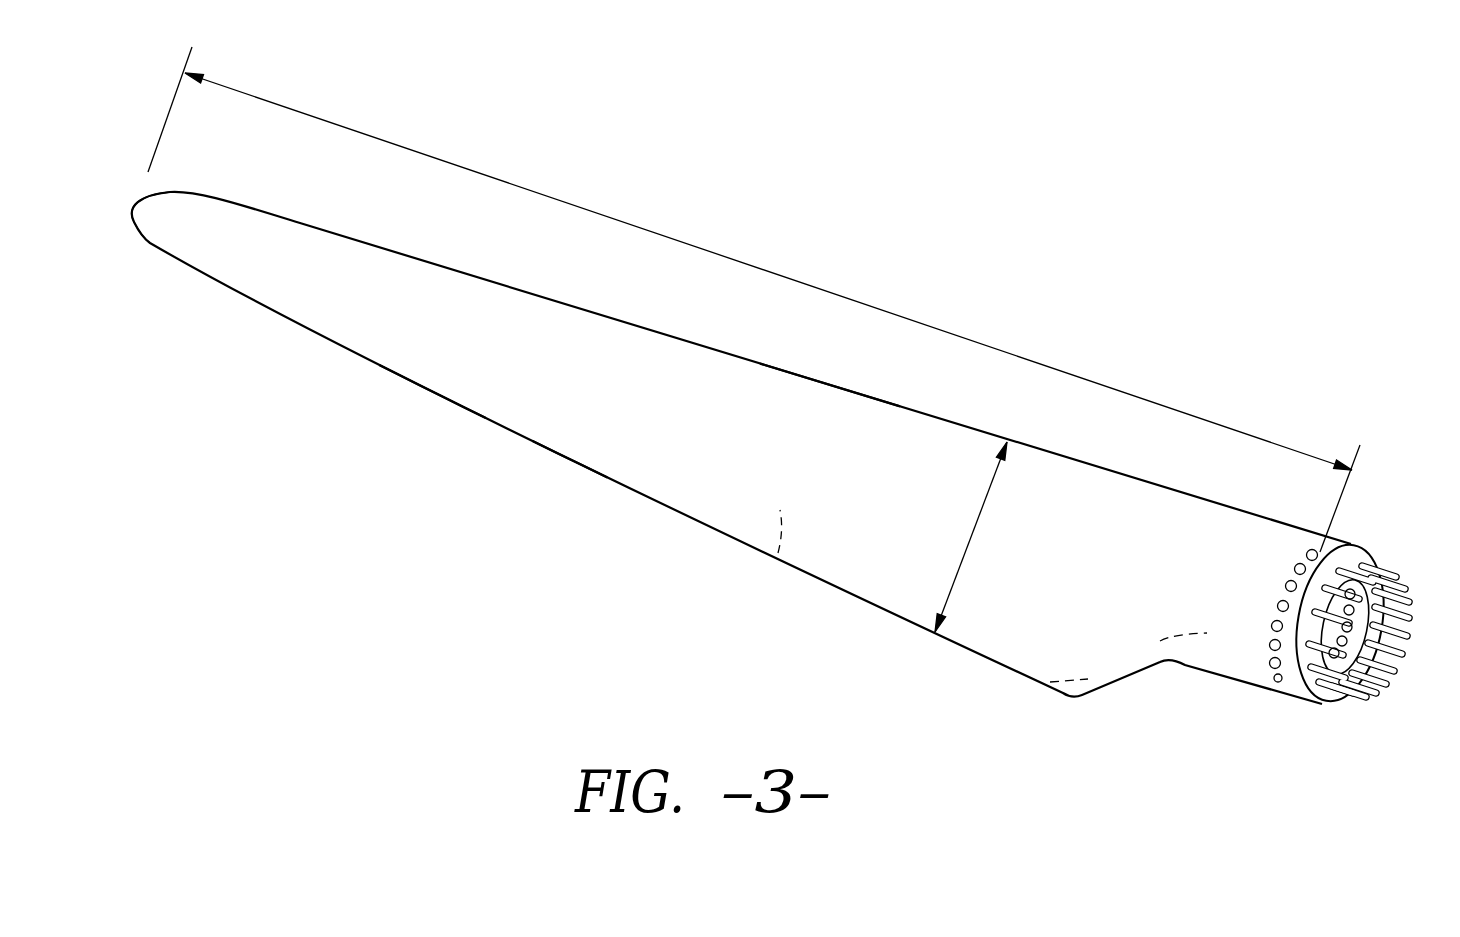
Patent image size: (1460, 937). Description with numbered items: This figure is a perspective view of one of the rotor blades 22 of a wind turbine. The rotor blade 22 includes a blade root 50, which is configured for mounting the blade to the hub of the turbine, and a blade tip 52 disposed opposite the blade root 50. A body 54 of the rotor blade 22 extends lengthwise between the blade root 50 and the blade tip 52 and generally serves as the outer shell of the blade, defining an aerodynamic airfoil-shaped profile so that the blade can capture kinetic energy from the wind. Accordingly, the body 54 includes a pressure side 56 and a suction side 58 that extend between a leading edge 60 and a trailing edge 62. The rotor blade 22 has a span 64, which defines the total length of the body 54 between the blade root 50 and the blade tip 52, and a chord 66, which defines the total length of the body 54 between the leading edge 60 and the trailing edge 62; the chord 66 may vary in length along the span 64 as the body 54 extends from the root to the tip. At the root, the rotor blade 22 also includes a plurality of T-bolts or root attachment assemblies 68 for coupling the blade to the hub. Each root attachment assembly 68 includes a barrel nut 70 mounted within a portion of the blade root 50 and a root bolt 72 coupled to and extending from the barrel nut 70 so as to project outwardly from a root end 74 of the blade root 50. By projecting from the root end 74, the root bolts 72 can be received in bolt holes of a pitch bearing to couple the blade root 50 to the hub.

The rotor blade 22 is at (1253, 249).
The blade root 50 is at (1263, 676).
The blade tip 52 is at (133, 204).
The body 54 is at (606, 337).
The pressure side 56 is at (778, 558).
The suction side 58 is at (477, 373).
The leading edge 60 is at (828, 385).
The trailing edge 62 is at (608, 482).
The span 64 is at (807, 284).
The chord 66 is at (967, 550).
The root attachment assembly 68 is at (1245, 613).
The barrel nut 70 is at (1305, 558).
The root bolt 72 is at (1405, 585).
The root end 74 is at (1322, 704).